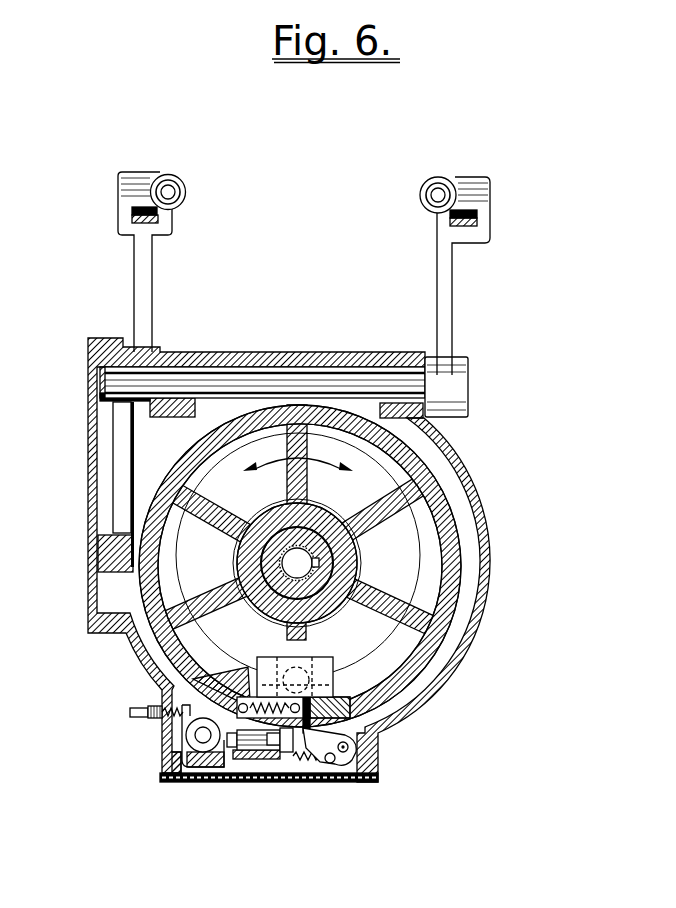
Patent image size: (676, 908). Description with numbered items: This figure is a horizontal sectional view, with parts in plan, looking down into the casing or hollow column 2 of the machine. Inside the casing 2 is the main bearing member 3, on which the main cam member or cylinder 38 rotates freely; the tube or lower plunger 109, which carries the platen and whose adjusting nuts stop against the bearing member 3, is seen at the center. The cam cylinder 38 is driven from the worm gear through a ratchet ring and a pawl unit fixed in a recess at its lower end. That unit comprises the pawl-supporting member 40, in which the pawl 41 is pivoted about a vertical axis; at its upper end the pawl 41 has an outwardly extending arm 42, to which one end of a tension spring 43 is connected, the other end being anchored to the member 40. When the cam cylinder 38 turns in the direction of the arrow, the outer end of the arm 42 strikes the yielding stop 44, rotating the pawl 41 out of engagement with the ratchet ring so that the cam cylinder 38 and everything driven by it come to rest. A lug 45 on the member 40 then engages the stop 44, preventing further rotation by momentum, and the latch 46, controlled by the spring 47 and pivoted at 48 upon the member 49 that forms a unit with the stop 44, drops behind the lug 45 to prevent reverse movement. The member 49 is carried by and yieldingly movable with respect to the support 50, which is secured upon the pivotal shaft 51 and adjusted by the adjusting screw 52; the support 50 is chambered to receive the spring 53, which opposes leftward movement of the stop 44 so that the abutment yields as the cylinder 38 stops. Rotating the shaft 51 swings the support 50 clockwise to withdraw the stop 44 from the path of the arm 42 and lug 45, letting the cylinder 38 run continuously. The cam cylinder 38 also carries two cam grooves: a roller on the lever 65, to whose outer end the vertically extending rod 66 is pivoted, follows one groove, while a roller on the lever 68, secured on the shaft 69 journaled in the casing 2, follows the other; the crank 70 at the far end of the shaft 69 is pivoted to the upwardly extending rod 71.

The casing or hollow column 2 is at (311, 353).
The main bearing member 3 is at (316, 534).
The main cam member or cylinder 38 is at (240, 411).
The pawl-supporting member 40 is at (333, 685).
The pawl 41 is at (382, 671).
The arm 42 is at (358, 746).
The tension spring 43 is at (116, 697).
The yielding stop 44 is at (268, 753).
The lug 45 is at (322, 758).
The latch 46 is at (331, 764).
The spring 47 is at (307, 757).
The pivot 48 is at (344, 753).
The member 49 is at (289, 754).
The support 50 is at (203, 738).
The pivotal shaft 51 is at (155, 758).
The adjusting screw 52 is at (130, 712).
The spring 53 is at (229, 757).
The lever 65 is at (156, 293).
The vertically extending rod 66 is at (221, 206).
The lever 68 is at (113, 454).
The shaft 69 is at (217, 380).
The crank 70 is at (434, 297).
The upwardly extending rod 71 is at (419, 197).
The tube or lower plunger 109 is at (316, 581).